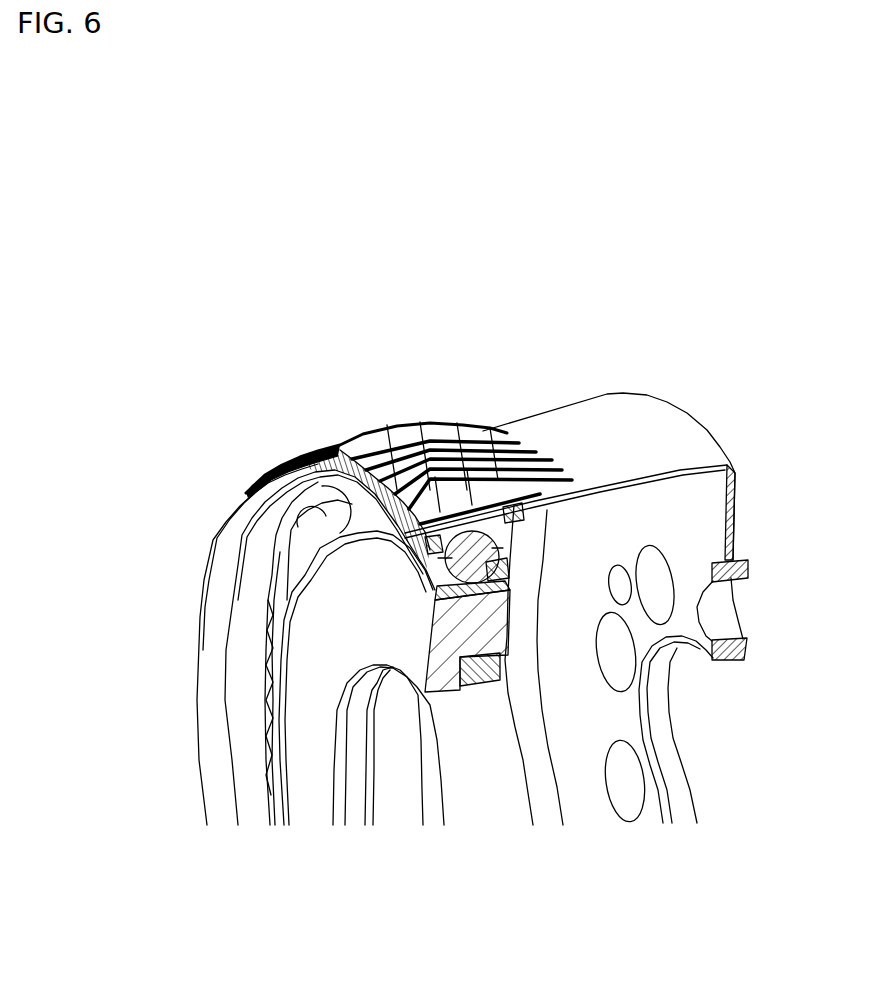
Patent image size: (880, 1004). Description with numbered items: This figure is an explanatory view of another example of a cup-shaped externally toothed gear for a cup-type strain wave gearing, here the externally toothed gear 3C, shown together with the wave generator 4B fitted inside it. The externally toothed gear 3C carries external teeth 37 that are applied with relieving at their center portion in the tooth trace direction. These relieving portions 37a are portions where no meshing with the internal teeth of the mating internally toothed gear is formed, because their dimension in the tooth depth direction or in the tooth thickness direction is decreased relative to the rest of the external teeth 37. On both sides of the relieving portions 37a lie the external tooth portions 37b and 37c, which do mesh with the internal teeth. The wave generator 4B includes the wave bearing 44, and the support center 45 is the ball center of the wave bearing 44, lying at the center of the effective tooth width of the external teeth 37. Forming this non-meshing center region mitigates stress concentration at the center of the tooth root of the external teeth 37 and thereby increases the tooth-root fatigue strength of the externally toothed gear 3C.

The externally toothed gear 3C is at (527, 356).
The external teeth 37 is at (409, 446).
The relieving portions 37a is at (455, 428).
The external tooth portion 37b is at (395, 428).
The external tooth portion 37c is at (486, 434).
The wave bearing 44 is at (258, 597).
The support center 45 is at (478, 590).
The wave generator 4B is at (245, 748).